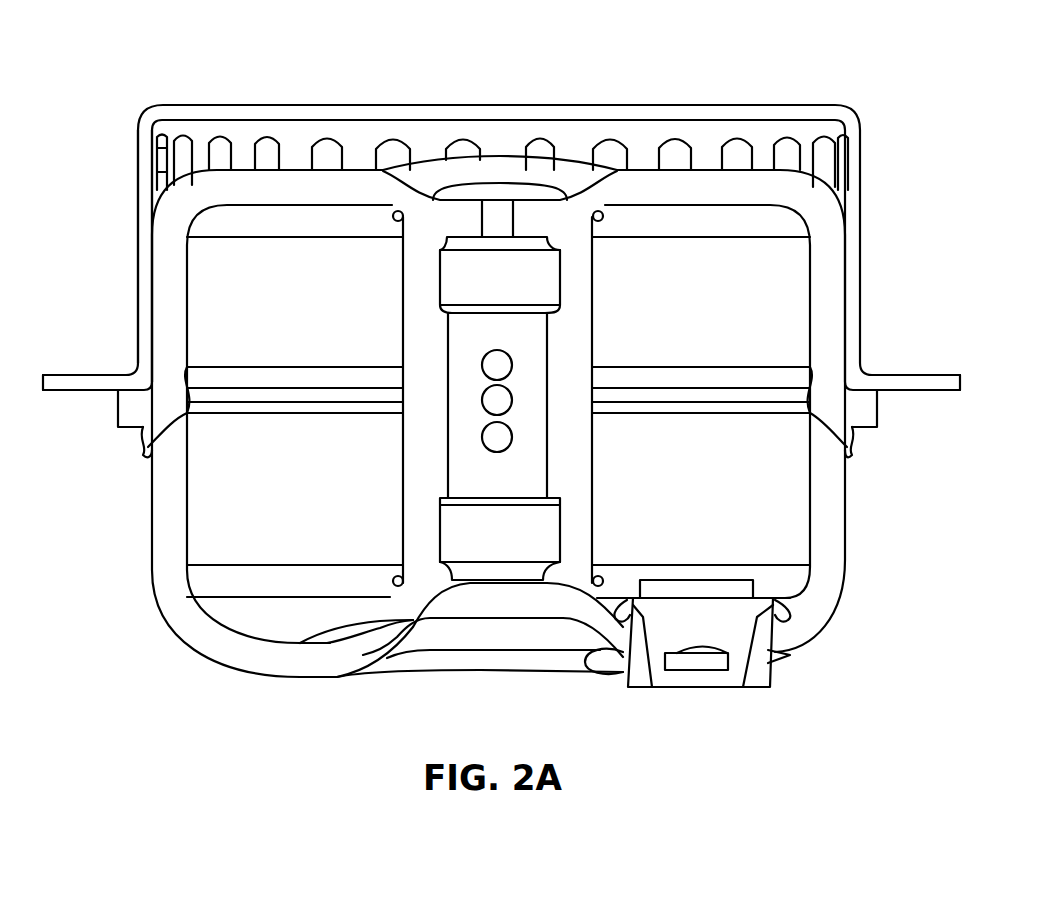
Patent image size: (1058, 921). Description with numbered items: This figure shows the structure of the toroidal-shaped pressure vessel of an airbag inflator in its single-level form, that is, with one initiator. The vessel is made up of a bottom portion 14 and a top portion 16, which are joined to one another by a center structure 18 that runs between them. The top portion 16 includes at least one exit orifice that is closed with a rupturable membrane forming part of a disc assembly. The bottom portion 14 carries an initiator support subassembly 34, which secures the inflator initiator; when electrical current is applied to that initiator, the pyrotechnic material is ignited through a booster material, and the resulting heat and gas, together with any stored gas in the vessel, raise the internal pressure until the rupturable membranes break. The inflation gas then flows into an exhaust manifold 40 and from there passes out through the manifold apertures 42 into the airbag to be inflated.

The bottom portion 14 is at (173, 550).
The top portion 16 is at (143, 248).
The center structure 18 is at (487, 487).
The initiator support subassembly 34 is at (763, 675).
The exhaust manifold 40 is at (347, 113).
The manifold apertures 42 is at (547, 147).